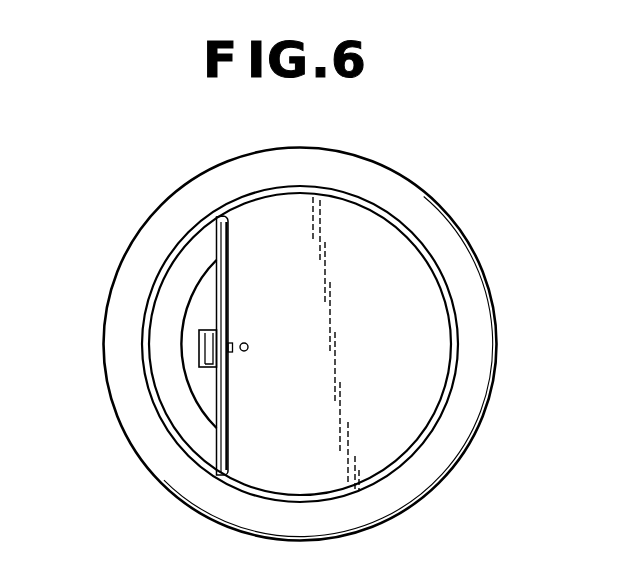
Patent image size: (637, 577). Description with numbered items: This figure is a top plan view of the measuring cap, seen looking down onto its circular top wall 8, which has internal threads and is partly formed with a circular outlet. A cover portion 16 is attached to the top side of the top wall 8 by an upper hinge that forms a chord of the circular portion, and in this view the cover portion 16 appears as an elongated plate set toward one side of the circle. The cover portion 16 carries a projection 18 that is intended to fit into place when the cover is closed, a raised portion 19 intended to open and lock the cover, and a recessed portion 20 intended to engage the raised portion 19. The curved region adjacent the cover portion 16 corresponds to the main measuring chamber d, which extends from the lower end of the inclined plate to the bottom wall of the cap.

The top wall 8 is at (420, 312).
The cover portion 16 is at (216, 240).
The projection 18 is at (199, 344).
The raised portion 19 is at (233, 350).
The recessed portion 20 is at (247, 343).
The main measuring chamber d is at (204, 398).